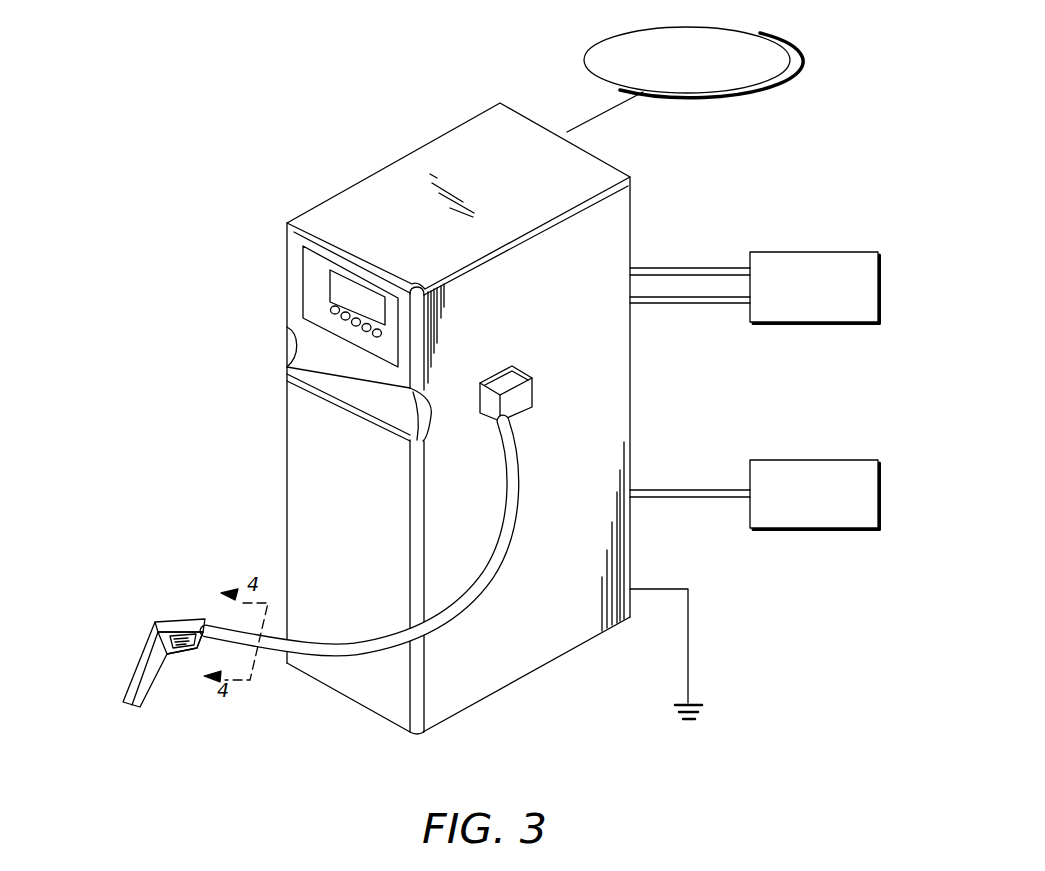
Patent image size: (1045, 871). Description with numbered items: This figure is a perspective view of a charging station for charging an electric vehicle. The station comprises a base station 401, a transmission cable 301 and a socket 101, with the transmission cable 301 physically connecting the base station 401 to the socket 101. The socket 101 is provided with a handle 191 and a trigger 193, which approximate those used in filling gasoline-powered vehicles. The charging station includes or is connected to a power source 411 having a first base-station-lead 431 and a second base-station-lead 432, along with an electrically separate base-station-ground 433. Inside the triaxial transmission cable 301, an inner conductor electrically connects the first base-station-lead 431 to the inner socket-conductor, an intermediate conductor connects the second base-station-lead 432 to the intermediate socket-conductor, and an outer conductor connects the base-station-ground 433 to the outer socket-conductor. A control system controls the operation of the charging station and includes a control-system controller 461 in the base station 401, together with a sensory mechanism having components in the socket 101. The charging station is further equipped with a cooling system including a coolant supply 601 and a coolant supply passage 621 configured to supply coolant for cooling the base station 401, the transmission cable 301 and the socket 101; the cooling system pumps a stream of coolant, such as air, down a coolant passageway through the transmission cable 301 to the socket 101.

The socket 101 is at (141, 651).
The handle 191 is at (167, 641).
The trigger 193 is at (179, 646).
The transmission cable 301 is at (331, 657).
The base station 401 is at (312, 497).
The power source 411 is at (862, 252).
The first base-station-lead 431 is at (667, 268).
The second base-station-lead 432 is at (667, 304).
The base-station-ground 433 is at (689, 648).
The control-system controller 461 is at (746, 30).
The coolant supply 601 is at (862, 460).
The coolant supply passage 621 is at (668, 490).